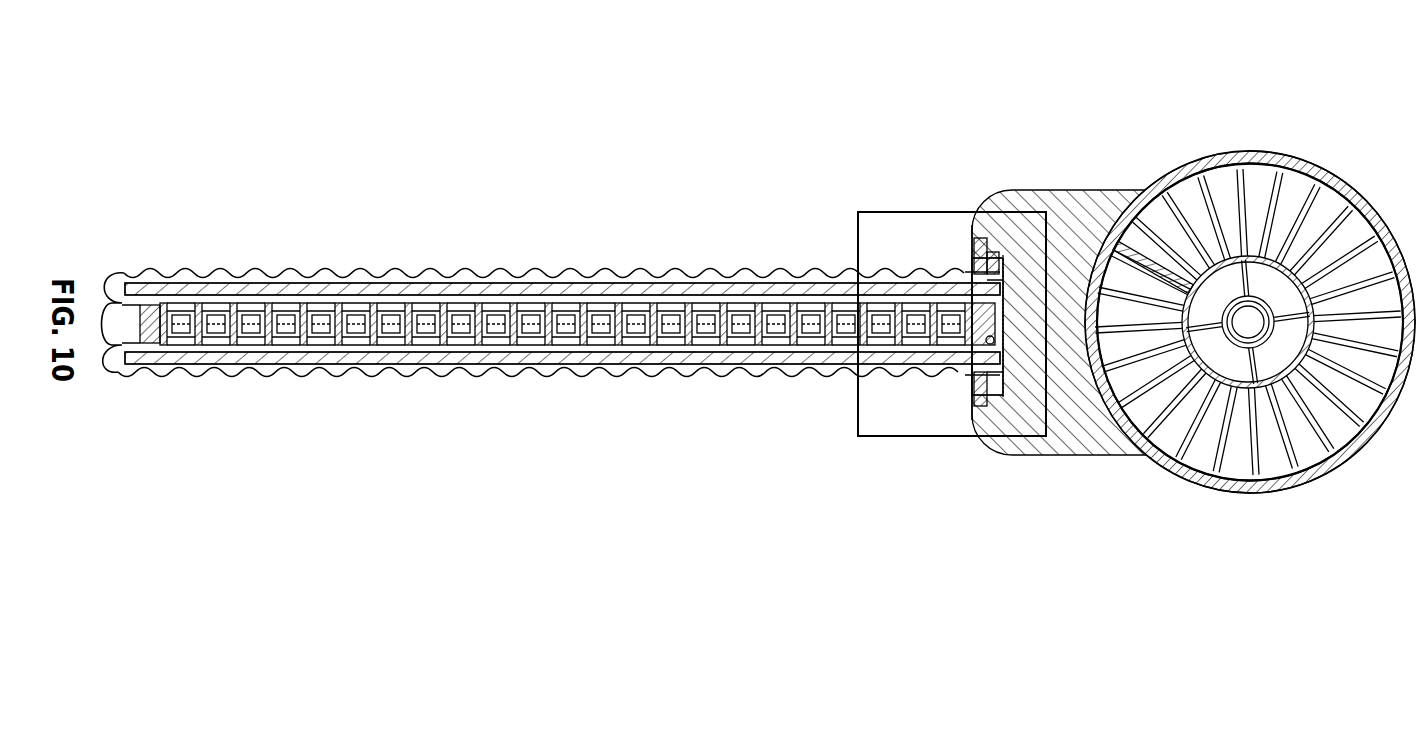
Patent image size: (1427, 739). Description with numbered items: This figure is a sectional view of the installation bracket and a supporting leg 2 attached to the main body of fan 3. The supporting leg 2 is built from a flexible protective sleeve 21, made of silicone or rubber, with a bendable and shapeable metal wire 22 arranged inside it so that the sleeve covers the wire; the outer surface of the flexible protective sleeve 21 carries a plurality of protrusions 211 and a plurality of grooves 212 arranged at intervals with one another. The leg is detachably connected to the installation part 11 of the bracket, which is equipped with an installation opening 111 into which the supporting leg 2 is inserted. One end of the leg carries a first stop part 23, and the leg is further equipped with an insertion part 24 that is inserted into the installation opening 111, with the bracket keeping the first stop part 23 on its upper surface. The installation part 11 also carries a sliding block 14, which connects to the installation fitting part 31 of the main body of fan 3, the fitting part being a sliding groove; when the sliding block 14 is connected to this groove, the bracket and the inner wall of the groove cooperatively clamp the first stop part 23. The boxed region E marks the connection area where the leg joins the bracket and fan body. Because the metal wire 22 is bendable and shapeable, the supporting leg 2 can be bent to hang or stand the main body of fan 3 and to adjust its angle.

The supporting leg 2 is at (551, 350).
The flexible protective sleeve 21 is at (782, 370).
The metal wire 22 is at (703, 358).
The protrusions 211 is at (612, 375).
The grooves 212 is at (592, 370).
The installation part 11 is at (972, 385).
The installation opening 111 is at (967, 275).
The sliding block 14 is at (985, 395).
The first stop part 23 is at (1007, 260).
The insertion part 24 is at (975, 268).
The installation fitting part 31 is at (976, 262).
The main body of fan 3 is at (1135, 172).
The detail region E is at (957, 442).